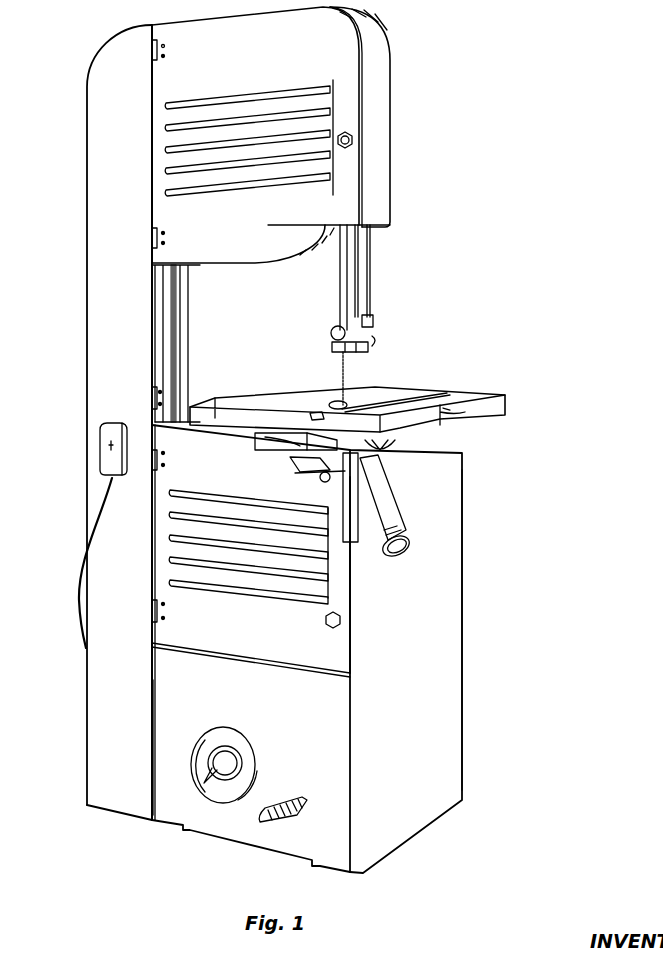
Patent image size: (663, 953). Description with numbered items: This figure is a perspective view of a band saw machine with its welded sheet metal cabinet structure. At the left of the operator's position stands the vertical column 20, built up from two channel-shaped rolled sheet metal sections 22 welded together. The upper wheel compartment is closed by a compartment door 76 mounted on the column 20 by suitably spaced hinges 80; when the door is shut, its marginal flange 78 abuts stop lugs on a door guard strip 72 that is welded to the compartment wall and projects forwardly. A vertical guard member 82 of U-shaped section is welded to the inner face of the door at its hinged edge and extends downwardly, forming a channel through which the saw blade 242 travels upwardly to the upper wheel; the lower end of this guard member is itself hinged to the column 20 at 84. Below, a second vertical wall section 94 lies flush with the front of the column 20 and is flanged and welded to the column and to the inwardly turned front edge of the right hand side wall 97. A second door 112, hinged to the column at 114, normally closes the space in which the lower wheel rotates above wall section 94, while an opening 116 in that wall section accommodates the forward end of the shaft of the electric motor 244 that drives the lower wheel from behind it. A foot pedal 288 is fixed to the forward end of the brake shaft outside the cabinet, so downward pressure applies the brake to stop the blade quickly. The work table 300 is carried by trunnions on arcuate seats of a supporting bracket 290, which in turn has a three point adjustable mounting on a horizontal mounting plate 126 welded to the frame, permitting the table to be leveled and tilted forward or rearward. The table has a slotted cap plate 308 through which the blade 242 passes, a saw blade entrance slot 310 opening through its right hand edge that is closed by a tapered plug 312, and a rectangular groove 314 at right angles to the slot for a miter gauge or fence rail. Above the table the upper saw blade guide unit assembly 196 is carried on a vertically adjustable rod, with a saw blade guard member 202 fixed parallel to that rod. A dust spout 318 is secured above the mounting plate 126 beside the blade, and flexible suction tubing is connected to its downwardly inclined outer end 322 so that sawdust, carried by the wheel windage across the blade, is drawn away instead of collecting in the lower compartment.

The vertical column 20 is at (80, 343).
The rolled sheet metal section 22 is at (113, 272).
The door guard strip 72 is at (373, 127).
The compartment door 76 is at (249, 61).
The marginal flange 78 is at (358, 190).
The hinge 80 is at (153, 46).
The vertical guard member 82 is at (165, 324).
The hinge of guard member 84 is at (152, 402).
The second vertical wall section 94 is at (168, 706).
The right hand side wall 97 is at (443, 641).
The second door 112 is at (196, 478).
The hinge of second door 114 is at (153, 462).
The opening 116 is at (242, 746).
The mounting plate 126 is at (398, 471).
The upper saw blade guide unit assembly 196 is at (327, 338).
The saw blade guard member 202 is at (345, 283).
The saw blade 242 is at (350, 373).
The electric motor 244 is at (236, 790).
The foot pedal 288 is at (287, 826).
The supporting bracket 290 is at (395, 449).
The work table 300 is at (497, 405).
The slotted cap plate 308 is at (334, 403).
The saw blade entrance slot 310 is at (444, 392).
The tapered plug 312 is at (448, 413).
The rectangular groove 314 is at (310, 416).
The dust spout 318 is at (386, 510).
The downwardly inclined outer end 322 is at (380, 552).